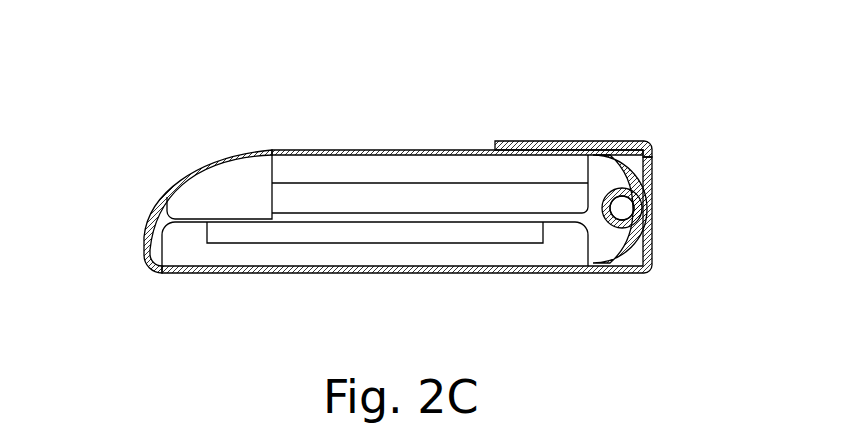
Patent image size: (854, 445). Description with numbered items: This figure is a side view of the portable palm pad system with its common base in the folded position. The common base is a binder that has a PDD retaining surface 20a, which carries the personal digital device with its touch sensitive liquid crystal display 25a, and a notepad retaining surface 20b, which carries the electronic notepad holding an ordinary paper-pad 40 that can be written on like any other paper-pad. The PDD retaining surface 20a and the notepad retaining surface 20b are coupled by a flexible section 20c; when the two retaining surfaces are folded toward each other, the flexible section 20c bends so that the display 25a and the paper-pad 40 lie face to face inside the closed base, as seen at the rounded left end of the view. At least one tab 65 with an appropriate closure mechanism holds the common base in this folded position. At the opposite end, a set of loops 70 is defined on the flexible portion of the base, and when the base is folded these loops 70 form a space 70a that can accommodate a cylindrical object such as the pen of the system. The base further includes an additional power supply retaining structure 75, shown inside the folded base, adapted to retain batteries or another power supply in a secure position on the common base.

The PDD retaining surface 20a is at (350, 150).
The notepad retaining surface 20b is at (365, 274).
The flexible section 20c is at (188, 169).
The touch sensitive liquid crystal display 25a is at (430, 211).
The paper-pad 40 is at (438, 232).
The tab 65 is at (607, 141).
The loops 70 is at (650, 230).
The space 70a is at (623, 208).
The power supply retaining structure 75 is at (248, 200).